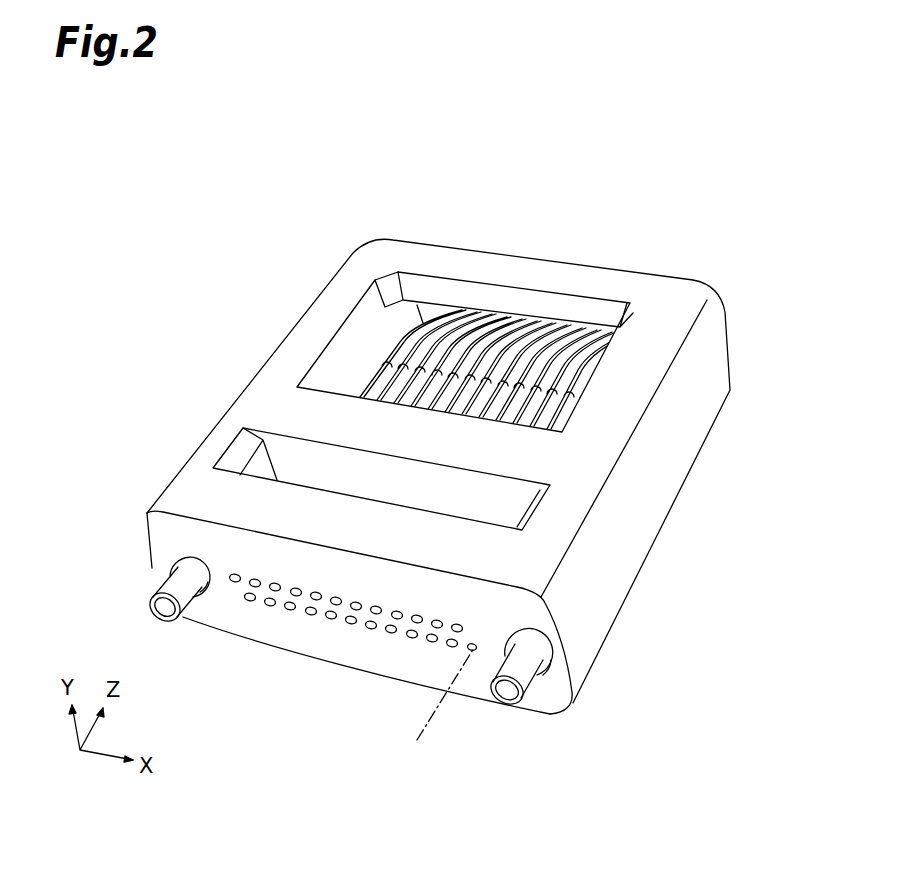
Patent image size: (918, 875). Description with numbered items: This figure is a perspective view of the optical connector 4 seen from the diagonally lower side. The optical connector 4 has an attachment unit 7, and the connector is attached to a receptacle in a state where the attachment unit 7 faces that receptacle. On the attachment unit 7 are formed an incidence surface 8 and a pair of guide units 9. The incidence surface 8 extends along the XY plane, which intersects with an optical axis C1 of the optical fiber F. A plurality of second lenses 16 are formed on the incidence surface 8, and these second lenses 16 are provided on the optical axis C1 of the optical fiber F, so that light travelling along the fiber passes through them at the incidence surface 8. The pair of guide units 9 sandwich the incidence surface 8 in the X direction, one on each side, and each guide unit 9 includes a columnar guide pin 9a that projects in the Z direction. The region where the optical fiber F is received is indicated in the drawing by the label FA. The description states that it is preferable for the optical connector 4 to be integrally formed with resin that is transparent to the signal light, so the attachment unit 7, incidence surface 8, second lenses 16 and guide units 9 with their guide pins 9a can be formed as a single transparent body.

The optical connector 4 is at (697, 178).
The attachment unit 7 is at (389, 681).
The incidence surface 8 is at (301, 636).
The guide unit 9 is at (158, 582).
The guide pin 9a is at (172, 623).
The second lens 16 is at (476, 655).
The optical axis C1 is at (417, 740).
The optical fiber F is at (452, 337).
The fin area FA is at (385, 333).